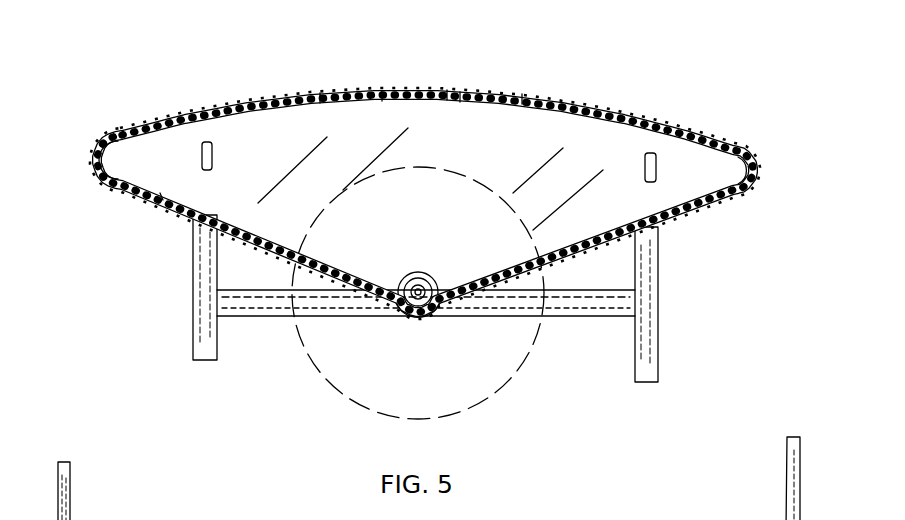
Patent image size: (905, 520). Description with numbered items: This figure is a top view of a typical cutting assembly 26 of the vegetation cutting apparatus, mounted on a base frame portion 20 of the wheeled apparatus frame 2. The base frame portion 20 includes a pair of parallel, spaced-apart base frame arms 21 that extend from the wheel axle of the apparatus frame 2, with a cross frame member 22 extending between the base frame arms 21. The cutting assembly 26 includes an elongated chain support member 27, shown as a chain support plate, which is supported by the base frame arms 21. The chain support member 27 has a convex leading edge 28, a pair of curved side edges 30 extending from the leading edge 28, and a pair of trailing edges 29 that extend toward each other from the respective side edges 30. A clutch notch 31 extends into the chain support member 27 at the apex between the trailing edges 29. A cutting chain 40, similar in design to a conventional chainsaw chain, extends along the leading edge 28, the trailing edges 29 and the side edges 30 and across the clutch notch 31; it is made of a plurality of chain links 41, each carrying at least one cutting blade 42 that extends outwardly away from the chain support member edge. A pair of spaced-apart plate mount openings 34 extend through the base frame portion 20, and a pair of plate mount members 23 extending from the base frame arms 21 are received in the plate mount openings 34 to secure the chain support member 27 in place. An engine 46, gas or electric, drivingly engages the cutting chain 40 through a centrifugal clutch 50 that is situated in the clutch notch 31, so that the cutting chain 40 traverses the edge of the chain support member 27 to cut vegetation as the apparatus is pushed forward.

The apparatus frame 2 is at (28, 519).
The base frame portion 20 is at (190, 297).
The base frame arms 21 is at (195, 333).
The cross frame member 22 is at (292, 318).
The plate mount members 23 is at (200, 153).
The cutting assembly 26 is at (125, 92).
The chain support member 27 is at (254, 92).
The leading edge 28 is at (447, 86).
The trailing edges 29 is at (160, 198).
The side edges 30 is at (93, 150).
The clutch notch 31 is at (418, 272).
The plate mount openings 34 is at (213, 165).
The cutting chain 40 is at (630, 103).
The chain links 41 is at (458, 101).
The cutting blade 42 is at (383, 86).
The engine 46 is at (370, 380).
The centrifugal clutch 50 is at (398, 288).